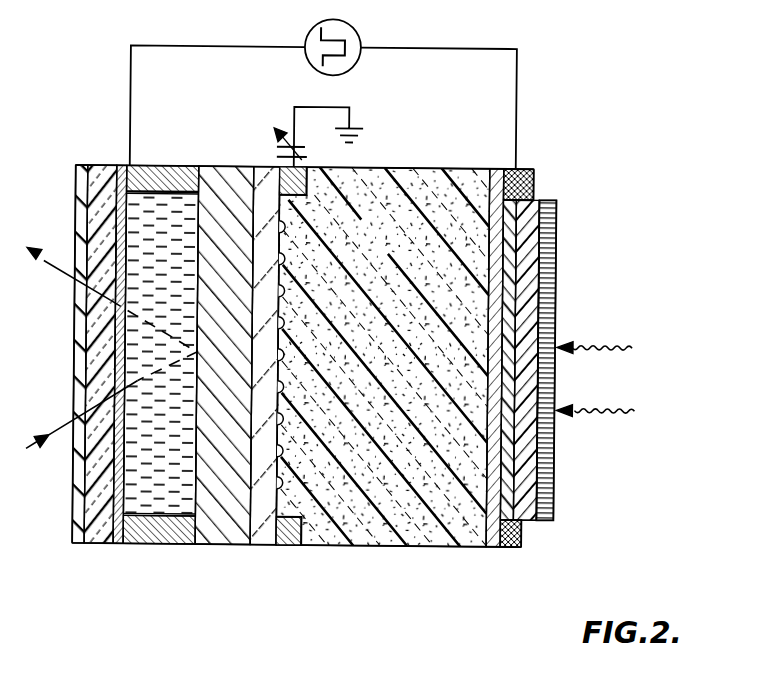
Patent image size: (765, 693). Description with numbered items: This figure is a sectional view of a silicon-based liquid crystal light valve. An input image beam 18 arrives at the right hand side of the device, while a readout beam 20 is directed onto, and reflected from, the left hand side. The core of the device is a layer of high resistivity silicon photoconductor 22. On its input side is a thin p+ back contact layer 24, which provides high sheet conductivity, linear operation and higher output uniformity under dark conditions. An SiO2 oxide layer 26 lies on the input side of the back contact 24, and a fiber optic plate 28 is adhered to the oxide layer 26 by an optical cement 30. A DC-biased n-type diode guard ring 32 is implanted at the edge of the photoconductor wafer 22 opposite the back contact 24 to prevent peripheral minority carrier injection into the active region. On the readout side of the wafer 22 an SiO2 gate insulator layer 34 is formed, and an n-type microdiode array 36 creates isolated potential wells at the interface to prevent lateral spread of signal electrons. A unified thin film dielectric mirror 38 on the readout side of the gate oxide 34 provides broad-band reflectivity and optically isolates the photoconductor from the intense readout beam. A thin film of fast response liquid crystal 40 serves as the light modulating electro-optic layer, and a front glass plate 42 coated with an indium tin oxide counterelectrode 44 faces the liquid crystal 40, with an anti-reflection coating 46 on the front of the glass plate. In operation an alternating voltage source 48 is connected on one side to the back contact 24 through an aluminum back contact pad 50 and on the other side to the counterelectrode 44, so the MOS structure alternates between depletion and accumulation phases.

The input image beam 18 is at (597, 410).
The readout beam 20 is at (62, 431).
The silicon photoconductor 22 is at (385, 548).
The back contact layer 24 is at (490, 547).
The oxide layer 26 is at (502, 503).
The fiber optic plate 28 is at (552, 198).
The optical cement 30 is at (525, 240).
The diode guard ring 32 is at (295, 548).
The gate insulator layer 34 is at (270, 548).
The microdiode array 36 is at (287, 258).
The dielectric mirror 38 is at (215, 535).
The liquid crystal 40 is at (155, 505).
The front glass plate 42 is at (95, 533).
The counterelectrode 44 is at (122, 167).
The anti-reflection coating 46 is at (82, 167).
The alternating voltage source 48 is at (355, 24).
The back contact pad 50 is at (533, 176).